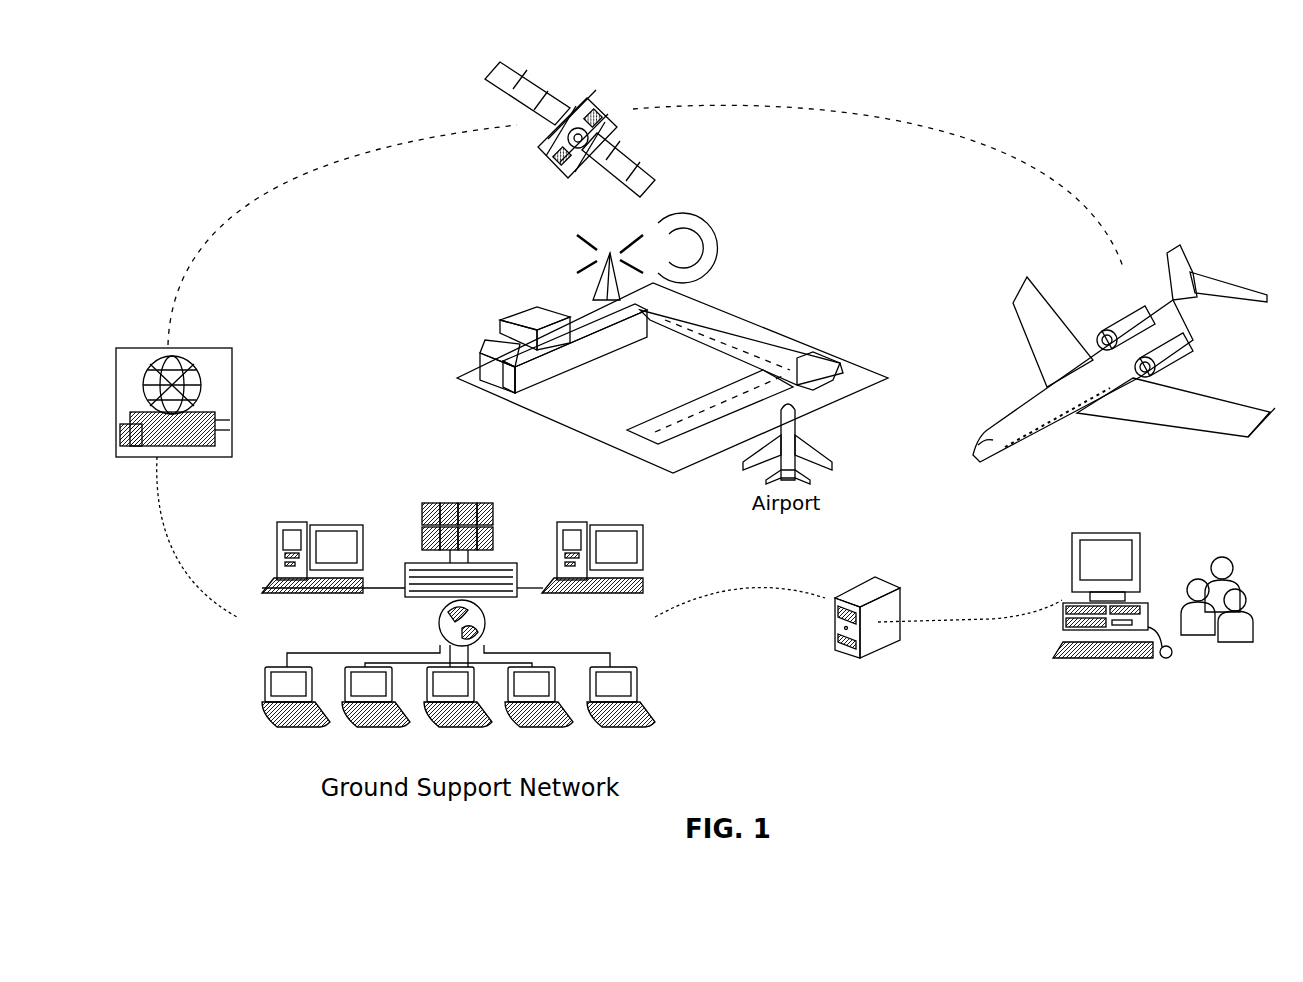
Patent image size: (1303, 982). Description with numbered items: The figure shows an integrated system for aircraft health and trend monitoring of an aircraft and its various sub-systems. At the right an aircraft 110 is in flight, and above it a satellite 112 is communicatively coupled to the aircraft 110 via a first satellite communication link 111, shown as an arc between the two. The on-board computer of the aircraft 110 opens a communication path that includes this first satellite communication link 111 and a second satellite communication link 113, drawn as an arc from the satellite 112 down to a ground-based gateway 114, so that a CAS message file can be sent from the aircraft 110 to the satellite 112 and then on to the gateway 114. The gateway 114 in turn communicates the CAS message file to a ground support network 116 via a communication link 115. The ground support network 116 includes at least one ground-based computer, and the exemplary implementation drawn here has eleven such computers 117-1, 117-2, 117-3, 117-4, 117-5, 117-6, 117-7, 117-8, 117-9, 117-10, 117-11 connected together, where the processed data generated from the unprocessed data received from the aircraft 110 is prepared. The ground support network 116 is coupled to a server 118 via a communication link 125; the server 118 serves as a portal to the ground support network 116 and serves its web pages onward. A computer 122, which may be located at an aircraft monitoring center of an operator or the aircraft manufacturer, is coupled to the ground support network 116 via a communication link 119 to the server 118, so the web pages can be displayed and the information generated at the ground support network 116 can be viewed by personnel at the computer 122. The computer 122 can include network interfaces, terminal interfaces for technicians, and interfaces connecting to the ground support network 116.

The aircraft 110 is at (1223, 276).
The first satellite communication link 111 is at (720, 105).
The satellite 112 is at (548, 90).
The second satellite communication link 113 is at (303, 180).
The gateway 114 is at (184, 346).
The communication link 115 is at (172, 538).
The ground support network 116 is at (250, 648).
The ground-based computer 117-1 is at (297, 523).
The ground-based computer 117-2 is at (607, 524).
The ground-based computer 117-3 is at (297, 727).
The ground-based computer 117-4 is at (377, 727).
The ground-based computer 117-5 is at (459, 727).
The ground-based computer 117-6 is at (540, 727).
The ground-based computer 117-7 is at (622, 727).
The ground-based computer 117-8 is at (420, 510).
The ground-based computer 117-9 is at (437, 501).
The ground-based computer 117-10 is at (463, 501).
The ground-based computer 117-11 is at (495, 512).
The server 118 is at (888, 581).
The communication link 119 is at (997, 617).
The computer 122 is at (1108, 533).
The communication link 125 is at (740, 590).